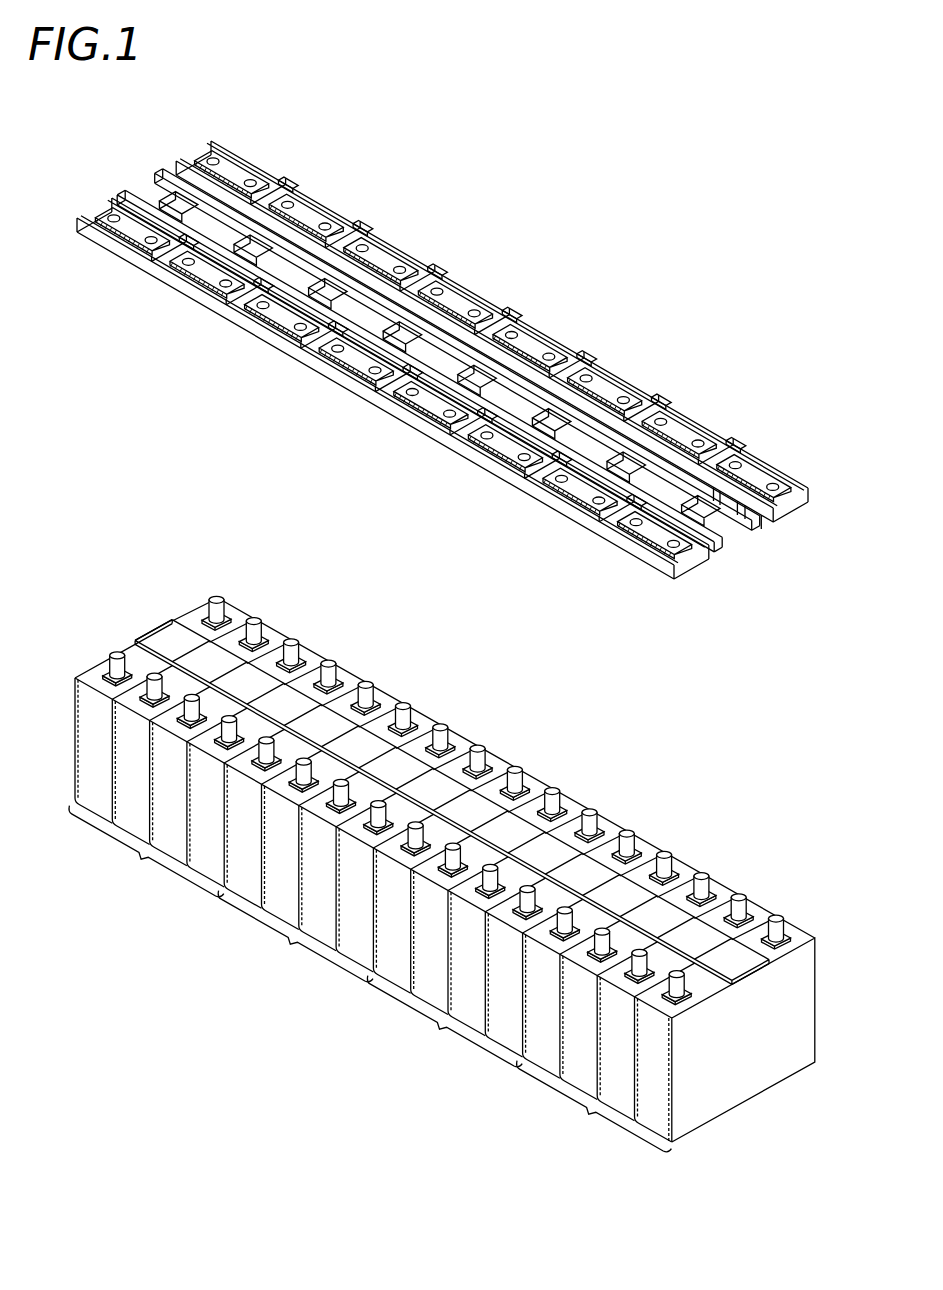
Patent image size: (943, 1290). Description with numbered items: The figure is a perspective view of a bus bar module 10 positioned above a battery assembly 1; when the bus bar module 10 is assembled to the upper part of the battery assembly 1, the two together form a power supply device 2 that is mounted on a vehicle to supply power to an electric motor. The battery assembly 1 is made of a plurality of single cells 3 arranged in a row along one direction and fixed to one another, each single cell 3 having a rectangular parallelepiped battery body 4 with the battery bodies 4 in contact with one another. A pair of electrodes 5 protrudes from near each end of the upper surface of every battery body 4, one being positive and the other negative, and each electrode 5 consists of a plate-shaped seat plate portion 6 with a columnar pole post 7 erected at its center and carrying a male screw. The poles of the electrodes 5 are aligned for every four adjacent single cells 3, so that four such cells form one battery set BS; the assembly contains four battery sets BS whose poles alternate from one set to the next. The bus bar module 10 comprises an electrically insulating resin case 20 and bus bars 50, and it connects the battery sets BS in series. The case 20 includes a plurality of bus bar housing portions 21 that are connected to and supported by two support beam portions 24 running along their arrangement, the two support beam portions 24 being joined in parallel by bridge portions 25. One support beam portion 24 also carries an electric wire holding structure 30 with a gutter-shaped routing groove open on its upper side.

The battery assembly 1 is at (440, 830).
The power supply device 2 is at (447, 357).
The single cell 3 is at (430, 703).
The battery body 4 is at (172, 620).
The electrode 5 is at (148, 597).
The seat plate portion 6 is at (104, 672).
The pole post 7 is at (110, 655).
The bus bar module 10 is at (438, 321).
The case 20 is at (447, 357).
The bus bar housing portion 21 is at (240, 155).
The support beam portion 24 is at (248, 222).
The bridge portion 25 is at (300, 245).
The electric wire holding structure 30 is at (330, 292).
The bus bar 50 is at (320, 248).
The battery set BS is at (370, 979).